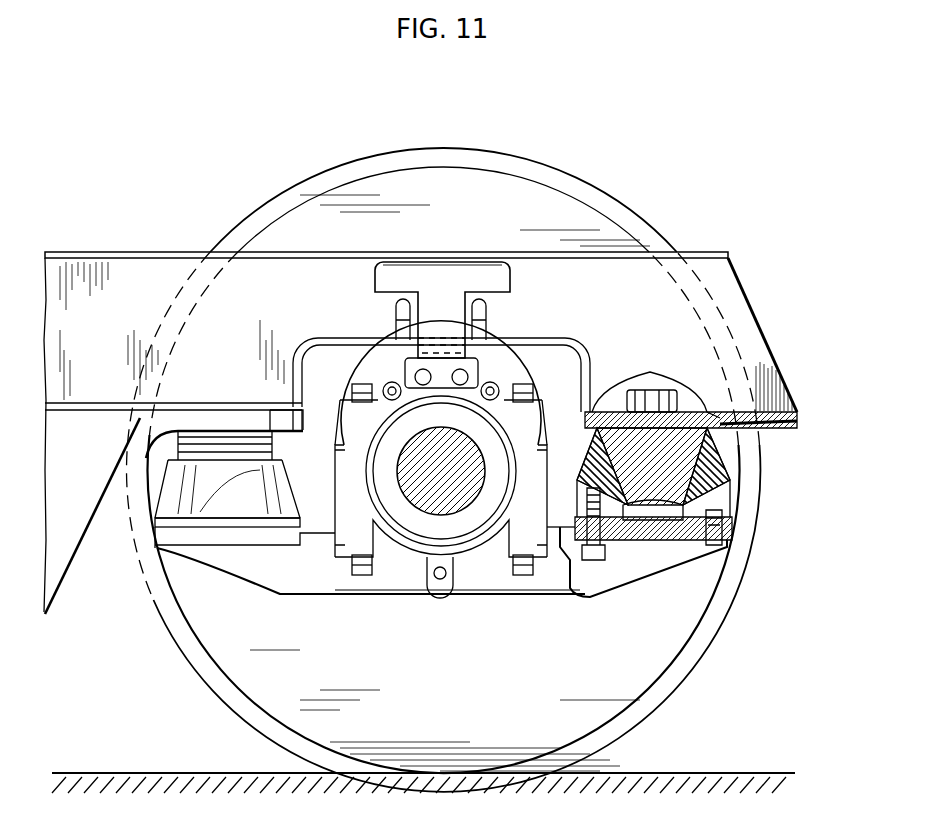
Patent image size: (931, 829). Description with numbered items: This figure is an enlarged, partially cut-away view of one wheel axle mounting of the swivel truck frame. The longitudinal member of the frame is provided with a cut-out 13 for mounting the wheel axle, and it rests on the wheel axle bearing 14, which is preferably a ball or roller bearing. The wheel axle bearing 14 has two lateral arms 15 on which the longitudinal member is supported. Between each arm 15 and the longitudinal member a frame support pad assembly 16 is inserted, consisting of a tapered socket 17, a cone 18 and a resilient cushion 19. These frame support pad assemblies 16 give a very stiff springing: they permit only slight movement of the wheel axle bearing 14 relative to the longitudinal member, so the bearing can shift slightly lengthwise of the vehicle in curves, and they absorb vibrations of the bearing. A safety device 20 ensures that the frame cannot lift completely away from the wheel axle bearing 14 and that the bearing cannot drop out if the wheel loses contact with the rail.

The cut-out 13 is at (568, 368).
The wheel axle bearing 14 is at (420, 521).
The lateral arm 15 is at (216, 560).
The frame support pad assembly 16 is at (157, 492).
The tapered socket 17 is at (722, 522).
The cone 18 is at (676, 433).
The resilient cushion 19 is at (700, 478).
The safety device 20 is at (427, 277).